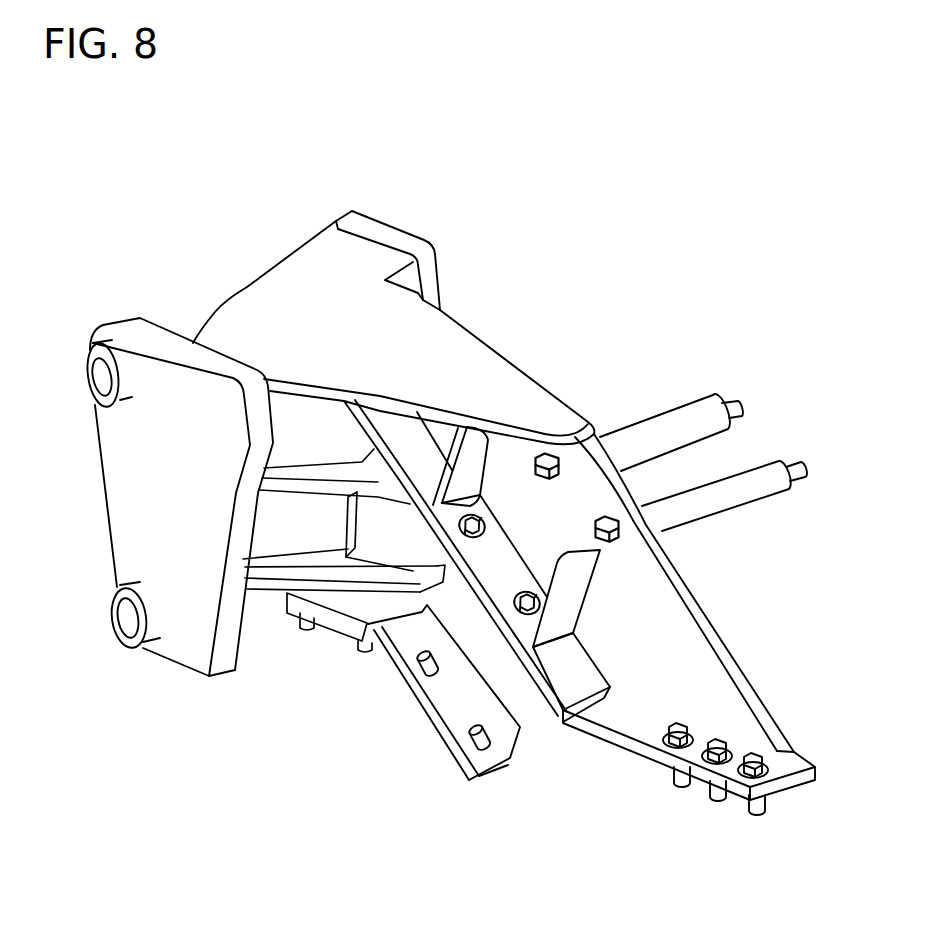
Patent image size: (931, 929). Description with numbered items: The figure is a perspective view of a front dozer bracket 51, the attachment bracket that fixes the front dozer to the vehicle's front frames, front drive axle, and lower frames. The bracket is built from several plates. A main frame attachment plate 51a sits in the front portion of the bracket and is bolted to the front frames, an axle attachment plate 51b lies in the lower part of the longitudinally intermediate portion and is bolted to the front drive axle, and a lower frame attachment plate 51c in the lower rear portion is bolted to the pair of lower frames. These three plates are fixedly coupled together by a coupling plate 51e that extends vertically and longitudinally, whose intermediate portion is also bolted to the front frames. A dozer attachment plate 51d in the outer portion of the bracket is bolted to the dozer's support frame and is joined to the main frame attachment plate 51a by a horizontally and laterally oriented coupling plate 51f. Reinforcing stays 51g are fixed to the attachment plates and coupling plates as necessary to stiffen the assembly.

The front dozer bracket 51 is at (562, 178).
The main frame attachment plate 51a is at (398, 226).
The axle attachment plate 51b is at (557, 678).
The lower frame attachment plate 51c is at (638, 727).
The dozer attachment plate 51d is at (146, 362).
The coupling plate 51e is at (687, 637).
The coupling plate 51f is at (262, 288).
The reinforcing stays 51g is at (555, 640).